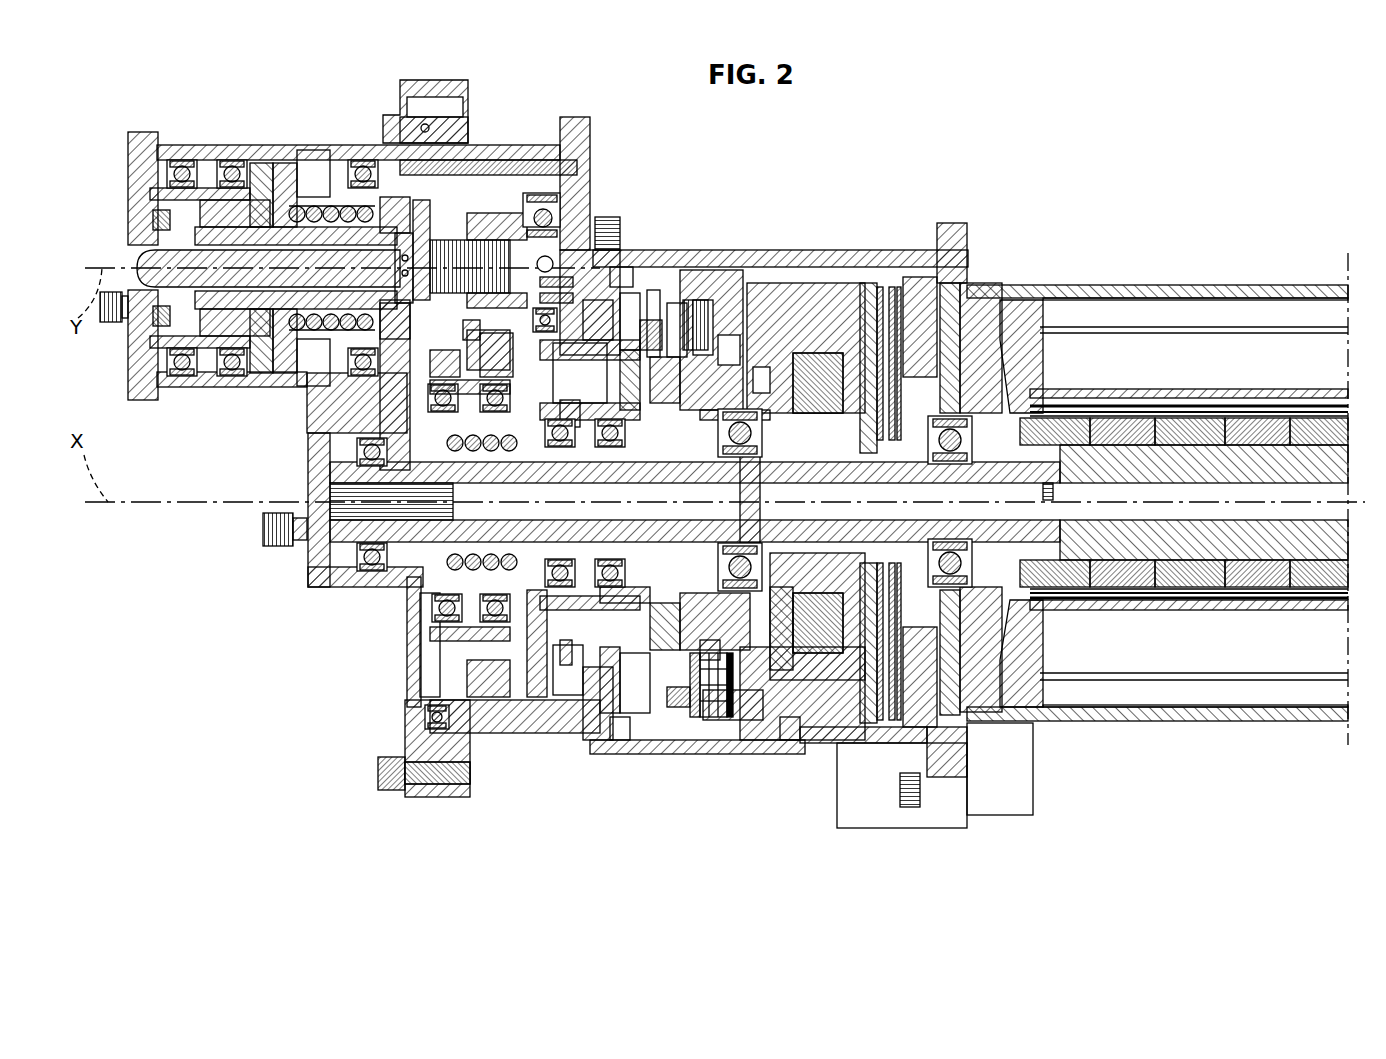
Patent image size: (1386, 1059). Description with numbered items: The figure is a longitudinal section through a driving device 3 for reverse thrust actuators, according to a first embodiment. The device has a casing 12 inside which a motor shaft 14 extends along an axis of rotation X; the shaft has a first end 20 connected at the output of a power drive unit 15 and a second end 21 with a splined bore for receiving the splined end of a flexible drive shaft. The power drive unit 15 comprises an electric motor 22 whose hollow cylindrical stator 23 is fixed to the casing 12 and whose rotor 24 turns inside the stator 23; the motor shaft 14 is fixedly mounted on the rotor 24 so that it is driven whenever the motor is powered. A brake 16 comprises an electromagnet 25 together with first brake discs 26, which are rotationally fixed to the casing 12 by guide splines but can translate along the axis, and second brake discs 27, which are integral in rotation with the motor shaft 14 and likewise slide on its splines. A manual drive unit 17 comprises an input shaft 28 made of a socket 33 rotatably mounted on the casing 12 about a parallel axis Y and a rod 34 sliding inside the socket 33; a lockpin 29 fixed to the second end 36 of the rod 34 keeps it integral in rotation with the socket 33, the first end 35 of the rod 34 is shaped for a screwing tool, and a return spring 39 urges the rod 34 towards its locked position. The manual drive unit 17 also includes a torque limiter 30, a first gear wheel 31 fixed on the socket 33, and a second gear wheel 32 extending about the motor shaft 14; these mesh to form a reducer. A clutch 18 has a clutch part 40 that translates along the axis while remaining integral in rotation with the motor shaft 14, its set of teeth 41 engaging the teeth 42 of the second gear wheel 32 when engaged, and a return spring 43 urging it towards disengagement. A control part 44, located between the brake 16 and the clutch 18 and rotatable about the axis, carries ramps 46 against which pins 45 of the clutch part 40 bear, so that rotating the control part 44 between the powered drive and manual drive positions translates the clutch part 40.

The driving device 3 is at (213, 72).
The casing 12 is at (498, 158).
The second motor shaft 14 is at (482, 535).
The power drive unit 15 is at (1148, 695).
The brake 16 is at (860, 700).
The manual drive unit 17 is at (360, 143).
The clutch 18 is at (562, 697).
The first end 20 is at (1027, 493).
The second end 21 is at (348, 520).
The electric motor 22 is at (1298, 645).
The stator 23 is at (1298, 360).
The rotor 24 is at (1240, 540).
The electromagnet 25 is at (820, 620).
The first brake discs 26 is at (887, 710).
The second brake discs 27 is at (900, 327).
The input shaft 28 is at (260, 320).
The lockpin 29 is at (395, 220).
The torque limiter 30 is at (272, 378).
The first gear wheel 31 is at (492, 220).
The second gear wheel 32 is at (505, 285).
The socket 33 is at (270, 233).
The rod 34 is at (187, 258).
The first end 35 is at (143, 263).
The second end 36 is at (425, 260).
The return spring 39 is at (473, 260).
The clutch part 40 is at (632, 600).
The set of teeth 41 is at (580, 583).
The teeth 42 is at (583, 603).
The return spring 43 is at (517, 578).
The control part 44 is at (705, 305).
The pins 45 is at (650, 340).
The ramps 46 is at (690, 330).